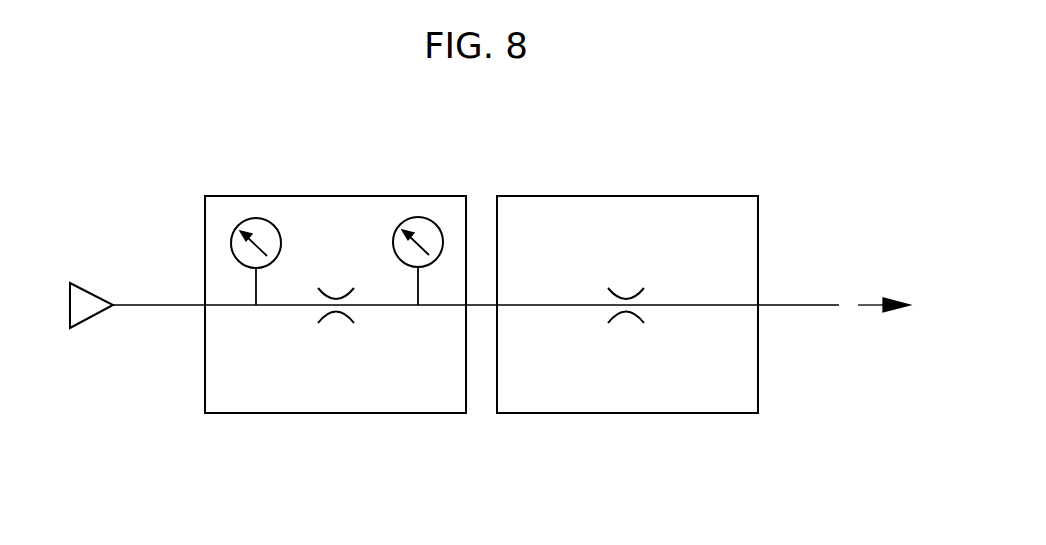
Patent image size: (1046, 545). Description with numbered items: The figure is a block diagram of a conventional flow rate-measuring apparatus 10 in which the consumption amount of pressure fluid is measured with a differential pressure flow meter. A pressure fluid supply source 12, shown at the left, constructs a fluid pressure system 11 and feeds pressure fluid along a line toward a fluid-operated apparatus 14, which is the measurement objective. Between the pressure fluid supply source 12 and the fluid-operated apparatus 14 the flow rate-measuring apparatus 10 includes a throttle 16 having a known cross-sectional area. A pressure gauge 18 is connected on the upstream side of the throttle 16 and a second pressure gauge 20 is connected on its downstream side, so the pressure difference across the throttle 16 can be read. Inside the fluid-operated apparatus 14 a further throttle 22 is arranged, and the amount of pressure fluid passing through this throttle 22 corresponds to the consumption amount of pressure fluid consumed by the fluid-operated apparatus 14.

The flow rate-measuring apparatus 10 is at (459, 184).
The fluid pressure system 11 is at (178, 125).
The pressure fluid supply source 12 is at (93, 288).
The fluid-operated apparatus 14 is at (718, 196).
The throttle 16 is at (336, 326).
The pressure gauge 18 is at (256, 218).
The pressure gauge 20 is at (418, 217).
The throttle 22 is at (626, 326).